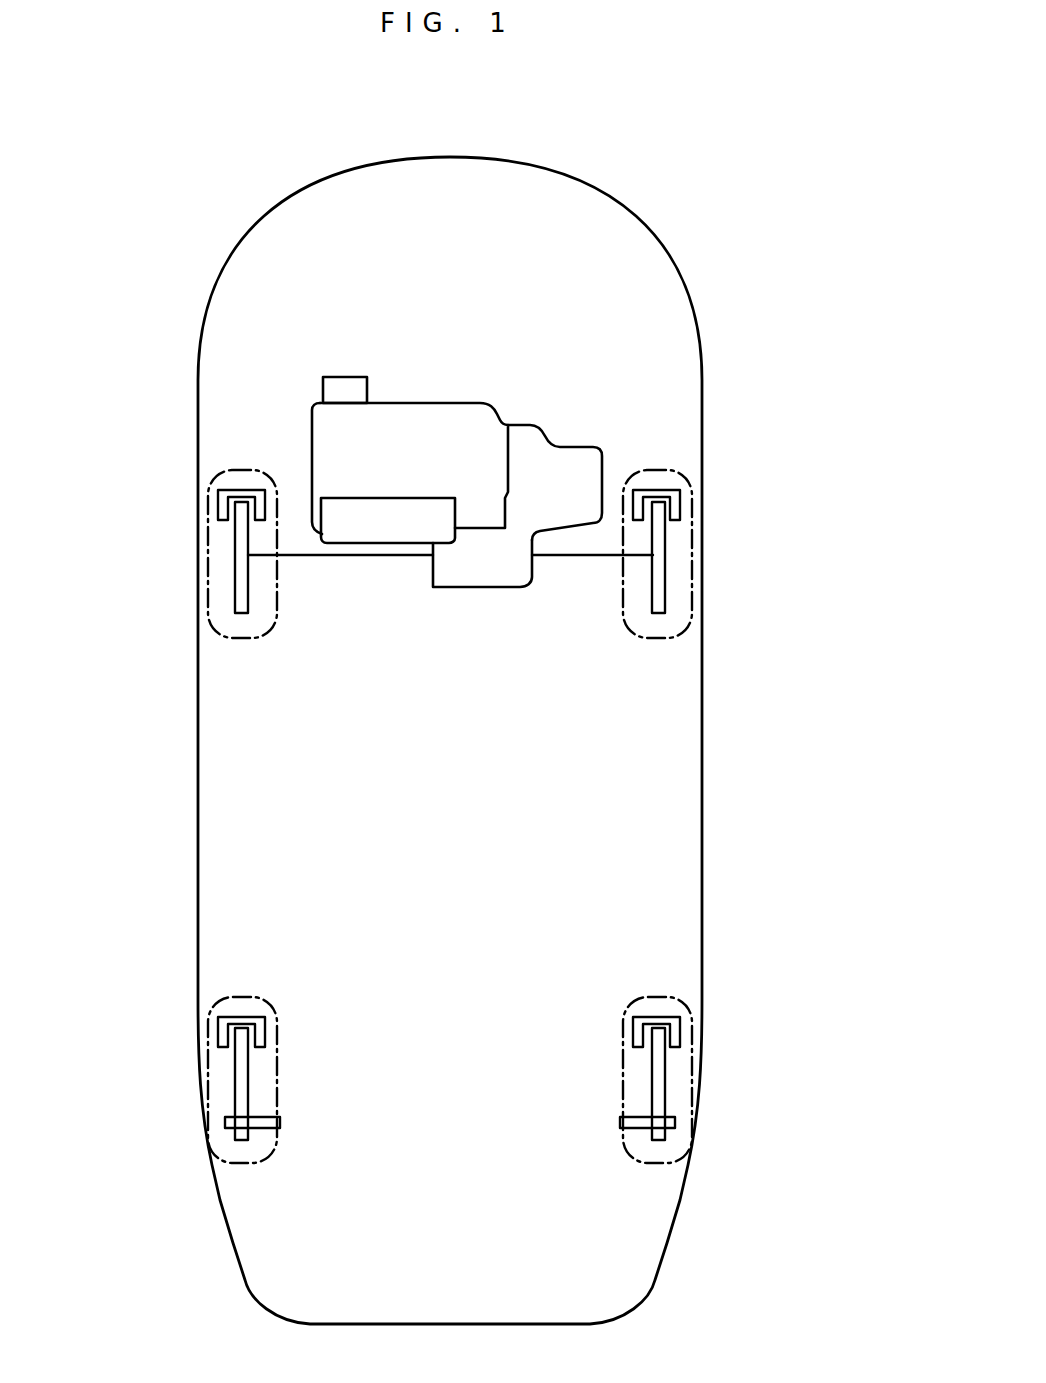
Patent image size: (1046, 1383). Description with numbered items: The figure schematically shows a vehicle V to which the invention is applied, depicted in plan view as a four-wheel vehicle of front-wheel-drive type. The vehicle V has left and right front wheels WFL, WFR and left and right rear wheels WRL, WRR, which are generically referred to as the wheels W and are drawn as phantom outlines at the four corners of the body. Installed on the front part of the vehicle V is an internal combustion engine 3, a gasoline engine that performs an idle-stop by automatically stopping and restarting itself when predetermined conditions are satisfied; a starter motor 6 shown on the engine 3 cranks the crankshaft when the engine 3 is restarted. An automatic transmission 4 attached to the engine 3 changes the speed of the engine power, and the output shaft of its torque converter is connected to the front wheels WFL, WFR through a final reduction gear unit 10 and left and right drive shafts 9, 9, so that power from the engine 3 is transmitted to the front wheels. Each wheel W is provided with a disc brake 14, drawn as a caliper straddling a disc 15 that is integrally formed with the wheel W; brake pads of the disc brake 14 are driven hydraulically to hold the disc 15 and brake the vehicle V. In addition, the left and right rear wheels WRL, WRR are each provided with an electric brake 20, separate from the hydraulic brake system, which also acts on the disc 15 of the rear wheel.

The vehicle V is at (507, 160).
The internal combustion engine 3 is at (418, 403).
The automatic transmission 4 is at (565, 447).
The starter motor 6 is at (347, 377).
The drive shafts 9 is at (335, 557).
The final reduction gear unit 10 is at (487, 589).
The disc brake 14 is at (204, 505).
The disc 15 is at (235, 580).
The electric brake 20 is at (226, 1120).
The wheels W is at (452, 819).
The left front wheel WFL is at (243, 470).
The right front wheel WFR is at (657, 470).
The left rear wheel WRL is at (243, 1163).
The right rear wheel WRR is at (657, 1163).